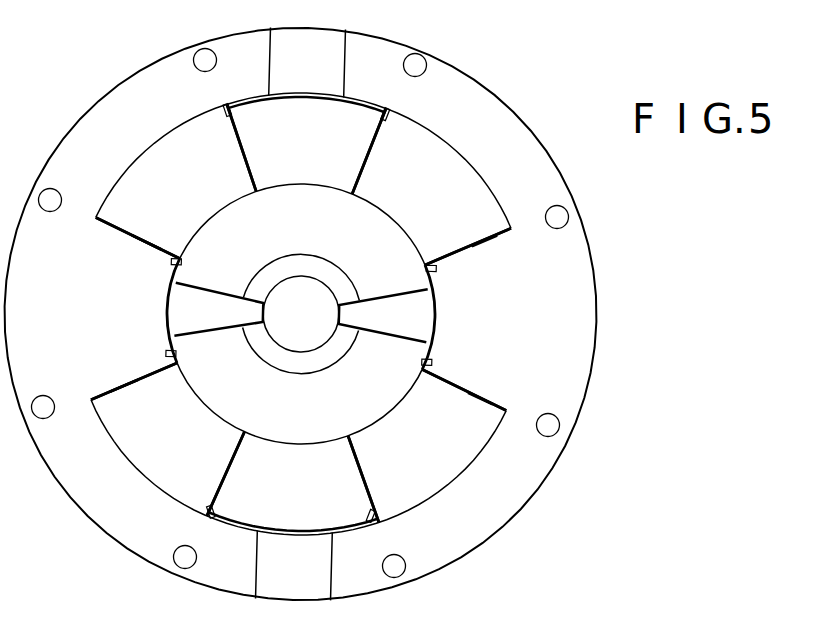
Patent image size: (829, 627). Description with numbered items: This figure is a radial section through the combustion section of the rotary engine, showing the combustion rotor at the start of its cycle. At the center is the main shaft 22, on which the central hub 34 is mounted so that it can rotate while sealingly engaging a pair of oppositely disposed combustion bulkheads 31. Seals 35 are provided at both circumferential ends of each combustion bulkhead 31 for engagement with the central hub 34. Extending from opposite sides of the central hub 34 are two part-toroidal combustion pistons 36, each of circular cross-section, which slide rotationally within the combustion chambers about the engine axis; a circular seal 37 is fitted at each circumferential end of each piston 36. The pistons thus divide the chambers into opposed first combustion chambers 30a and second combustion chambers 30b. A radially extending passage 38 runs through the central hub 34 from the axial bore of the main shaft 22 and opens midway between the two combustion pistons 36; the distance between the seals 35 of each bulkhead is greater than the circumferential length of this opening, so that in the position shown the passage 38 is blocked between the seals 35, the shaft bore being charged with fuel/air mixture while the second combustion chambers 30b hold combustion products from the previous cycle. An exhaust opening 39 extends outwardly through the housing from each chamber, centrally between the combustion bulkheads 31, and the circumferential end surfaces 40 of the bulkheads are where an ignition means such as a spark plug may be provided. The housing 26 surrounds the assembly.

The main shaft 22 is at (330, 271).
The housing 26 is at (302, 313).
The first combustion chambers 30a is at (212, 185).
The second combustion chambers 30b is at (444, 175).
The combustion bulkheads 31 is at (122, 338).
The central hub 34 is at (255, 362).
The seals 35 is at (171, 356).
The combustion pistons 36 is at (318, 146).
The circular seal 37 is at (383, 119).
The radially extending passage 38 is at (223, 326).
The exhaust opening 39 is at (320, 72).
The circumferential end surfaces 40 is at (183, 220).